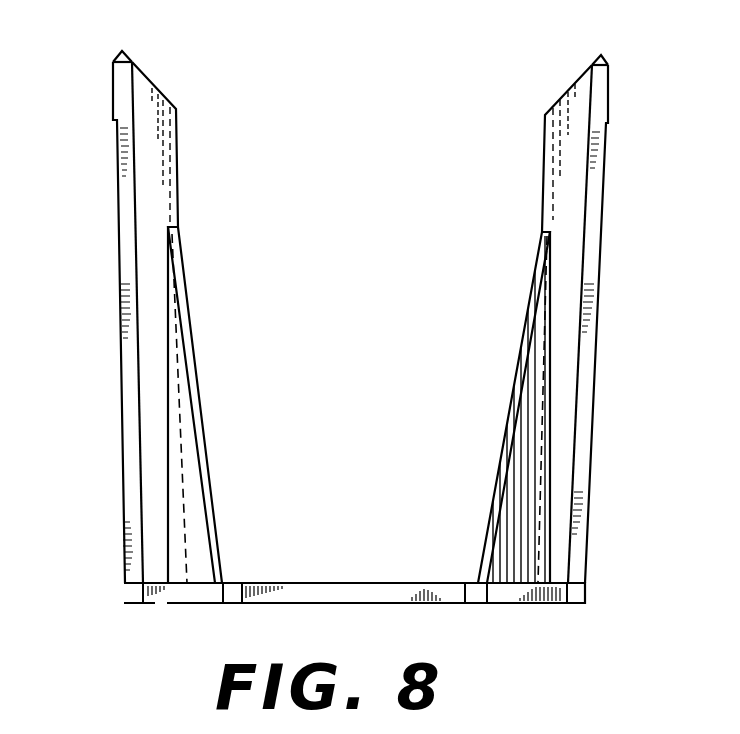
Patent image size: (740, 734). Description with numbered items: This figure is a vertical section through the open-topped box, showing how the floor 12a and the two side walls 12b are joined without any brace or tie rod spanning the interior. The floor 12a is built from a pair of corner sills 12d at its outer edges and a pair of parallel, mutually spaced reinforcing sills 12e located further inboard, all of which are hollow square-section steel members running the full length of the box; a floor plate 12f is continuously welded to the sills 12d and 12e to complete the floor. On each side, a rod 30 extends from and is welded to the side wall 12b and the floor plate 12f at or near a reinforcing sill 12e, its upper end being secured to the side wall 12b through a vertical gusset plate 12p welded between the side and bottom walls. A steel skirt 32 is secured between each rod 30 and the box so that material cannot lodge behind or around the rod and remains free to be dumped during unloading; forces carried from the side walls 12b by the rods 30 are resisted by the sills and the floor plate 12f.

The floor 12a is at (337, 566).
The side wall 12b is at (117, 313).
The corner sill 12d is at (127, 605).
The reinforcing sill 12e is at (237, 605).
The floor plate 12f is at (282, 582).
The gusset plate 12p is at (158, 156).
The rod 30 is at (203, 447).
The skirt 32 is at (195, 497).